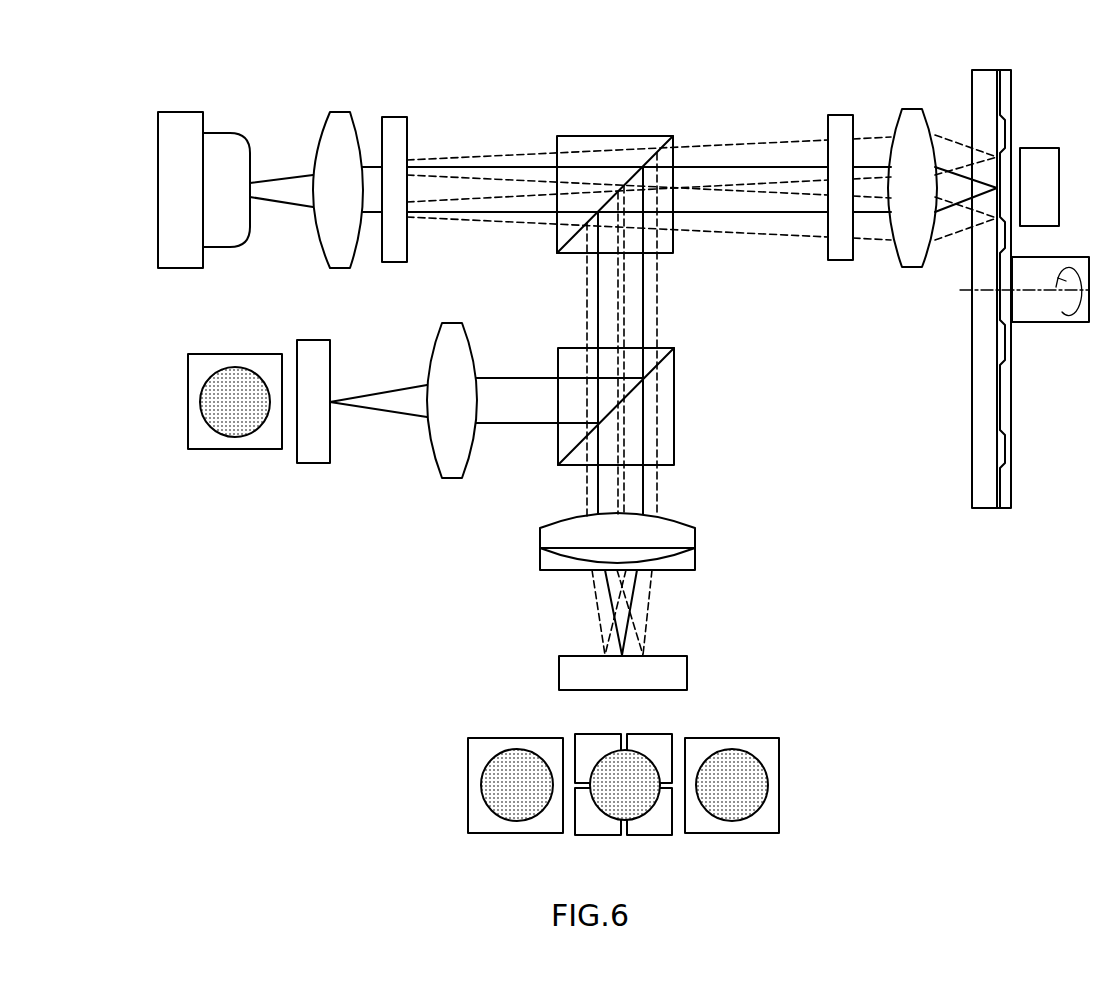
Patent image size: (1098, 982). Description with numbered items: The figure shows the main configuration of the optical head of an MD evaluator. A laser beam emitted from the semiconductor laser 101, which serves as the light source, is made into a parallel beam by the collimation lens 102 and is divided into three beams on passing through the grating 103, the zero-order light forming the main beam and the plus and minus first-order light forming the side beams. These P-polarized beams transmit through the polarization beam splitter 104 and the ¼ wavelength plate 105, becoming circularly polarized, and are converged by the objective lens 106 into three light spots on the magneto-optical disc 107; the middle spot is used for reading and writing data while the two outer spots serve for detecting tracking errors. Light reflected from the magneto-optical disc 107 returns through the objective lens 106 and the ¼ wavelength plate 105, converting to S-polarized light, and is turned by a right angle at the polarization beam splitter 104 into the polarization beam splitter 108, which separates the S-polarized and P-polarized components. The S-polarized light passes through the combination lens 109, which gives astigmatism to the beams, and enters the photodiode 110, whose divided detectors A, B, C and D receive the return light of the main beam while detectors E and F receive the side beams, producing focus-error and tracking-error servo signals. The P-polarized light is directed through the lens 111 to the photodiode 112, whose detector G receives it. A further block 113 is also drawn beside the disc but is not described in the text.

The semiconductor laser 101 is at (180, 110).
The collimation lens 102 is at (342, 110).
The grating 103 is at (395, 114).
The polarization beam splitter 104 is at (657, 135).
The ¼ wavelength plate 105 is at (837, 114).
The objective lens 106 is at (910, 108).
The magneto-optical disc 107 is at (988, 500).
The polarization beam splitter 108 is at (677, 368).
The combination lens 109 is at (696, 538).
The photodiode 110 is at (688, 663).
The lens 111 is at (452, 322).
The photodiode 112 is at (313, 340).
The sensor 113 is at (1040, 147).
The detector G is at (237, 353).
The detector A is at (592, 736).
The detector B is at (652, 736).
The detector C is at (645, 836).
The detector D is at (593, 836).
The detector E is at (517, 737).
The detector F is at (733, 737).